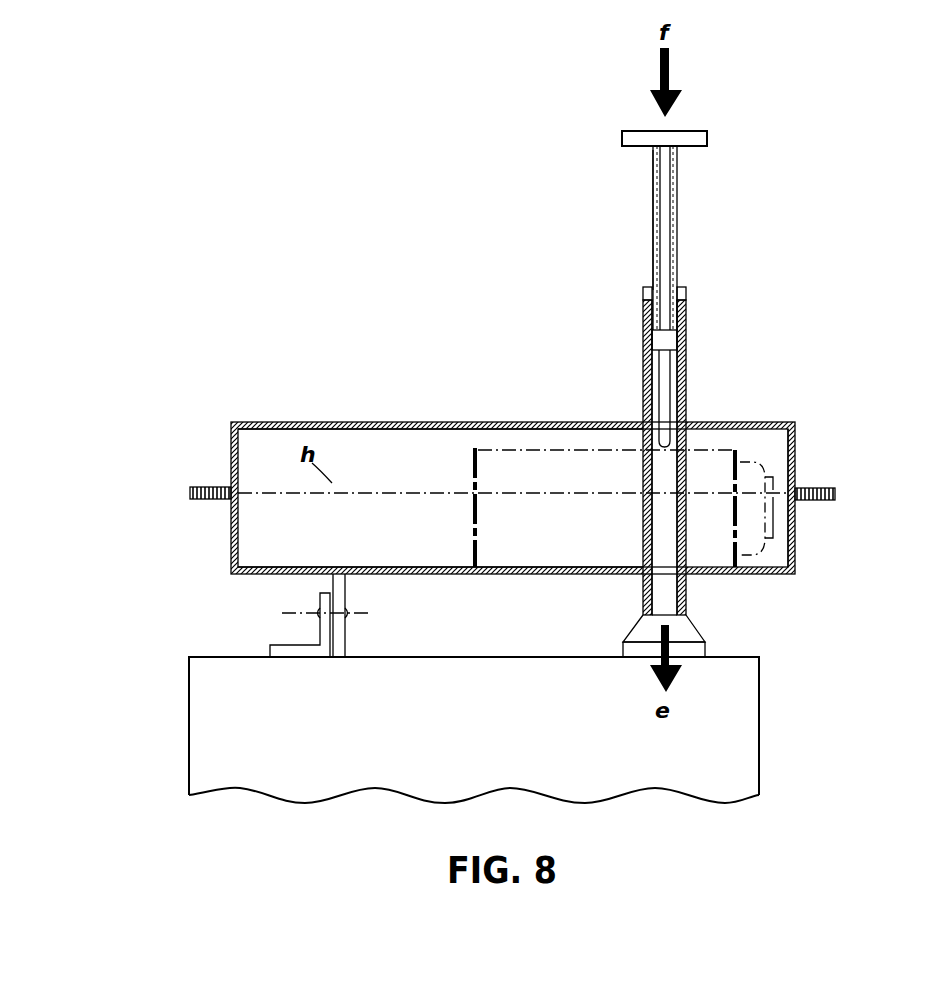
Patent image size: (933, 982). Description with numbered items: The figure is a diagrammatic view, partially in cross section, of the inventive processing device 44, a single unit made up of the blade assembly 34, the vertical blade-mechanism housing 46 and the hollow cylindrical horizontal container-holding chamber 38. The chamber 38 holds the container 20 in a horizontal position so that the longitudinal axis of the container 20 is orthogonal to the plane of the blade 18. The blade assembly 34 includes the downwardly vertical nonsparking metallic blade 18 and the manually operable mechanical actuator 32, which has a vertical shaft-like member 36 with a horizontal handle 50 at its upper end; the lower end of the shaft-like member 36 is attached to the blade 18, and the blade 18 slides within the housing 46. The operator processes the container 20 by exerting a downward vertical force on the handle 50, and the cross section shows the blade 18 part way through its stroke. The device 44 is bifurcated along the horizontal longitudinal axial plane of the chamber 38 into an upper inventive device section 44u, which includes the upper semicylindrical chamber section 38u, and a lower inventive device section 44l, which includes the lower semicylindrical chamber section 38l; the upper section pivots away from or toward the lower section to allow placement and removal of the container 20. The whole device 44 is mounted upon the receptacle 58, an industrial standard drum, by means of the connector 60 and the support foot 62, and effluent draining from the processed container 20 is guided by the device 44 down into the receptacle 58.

The processing device 44 is at (305, 251).
The upper inventive device section 44u is at (795, 460).
The lower inventive device section 44l is at (795, 530).
The container-holding chamber 38 is at (497, 420).
The upper semicylindrical chamber section 38u is at (258, 473).
The lower semicylindrical chamber section 38l is at (258, 513).
The container 20 is at (515, 478).
The vertical blade-mechanism housing 46 is at (688, 317).
The mechanical actuator 32 is at (677, 213).
The blade assembly 34 is at (703, 252).
The shaft-like member 36 is at (650, 185).
The handle 50 is at (683, 131).
The blade 18 is at (670, 402).
The connector 60 is at (697, 632).
The receptacle 58 is at (762, 740).
The support foot 62 is at (285, 644).